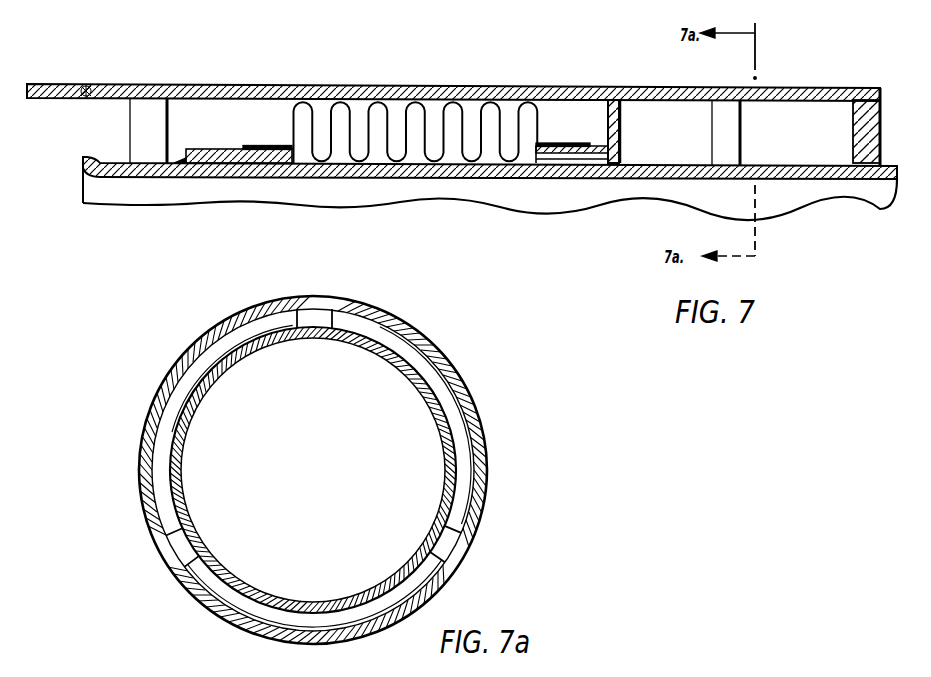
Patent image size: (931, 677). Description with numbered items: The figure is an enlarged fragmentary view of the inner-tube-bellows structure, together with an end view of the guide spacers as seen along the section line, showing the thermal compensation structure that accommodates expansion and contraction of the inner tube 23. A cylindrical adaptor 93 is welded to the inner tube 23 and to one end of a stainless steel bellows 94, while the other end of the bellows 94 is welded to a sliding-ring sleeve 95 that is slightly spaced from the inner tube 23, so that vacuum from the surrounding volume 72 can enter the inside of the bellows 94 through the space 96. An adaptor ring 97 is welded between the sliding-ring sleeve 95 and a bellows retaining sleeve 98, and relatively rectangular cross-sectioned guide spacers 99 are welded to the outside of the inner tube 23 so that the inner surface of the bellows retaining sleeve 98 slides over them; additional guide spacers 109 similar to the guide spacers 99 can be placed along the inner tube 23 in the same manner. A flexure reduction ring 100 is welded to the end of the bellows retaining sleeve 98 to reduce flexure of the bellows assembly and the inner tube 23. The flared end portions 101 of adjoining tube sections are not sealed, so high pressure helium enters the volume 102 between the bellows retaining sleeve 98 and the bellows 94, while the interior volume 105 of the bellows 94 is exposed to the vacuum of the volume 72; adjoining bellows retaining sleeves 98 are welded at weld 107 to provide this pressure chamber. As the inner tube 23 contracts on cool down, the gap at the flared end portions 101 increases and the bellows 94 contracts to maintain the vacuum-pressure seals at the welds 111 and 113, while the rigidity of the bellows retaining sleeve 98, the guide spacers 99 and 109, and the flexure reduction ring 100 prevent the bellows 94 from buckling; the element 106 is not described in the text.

In FIG. 7, the inner tube 23 is at (467, 165).
In FIG. 7a, the inner tube 23 is at (396, 371).
In FIG. 7, the volume 72 is at (860, 81).
In FIG. 7, the cylindrical adaptor 93 is at (208, 149).
In FIG. 7, the stainless steel bellows 94 is at (388, 100).
In FIG. 7, the sliding-ring sleeve 95 is at (619, 153).
In FIG. 7, the space 96 is at (630, 166).
In FIG. 7, the adaptor ring 97 is at (621, 117).
In FIG. 7, the bellows retaining sleeve 98 is at (233, 68).
In FIG. 7a, the bellows retaining sleeve 98 is at (490, 420).
In FIG. 7, the guide spacers 99 is at (718, 131).
In FIG. 7a, the guide spacers 99 is at (318, 318).
In FIG. 7, the flexure reduction ring 100 is at (853, 128).
In FIG. 7, the flared end portions 101 is at (86, 157).
In FIG. 7, the volume 102 is at (219, 123).
In FIG. 7, the interior volume 105 is at (378, 158).
In FIG. 7, the seal strip 106 is at (293, 141).
In FIG. 7, the weld 107 is at (89, 87).
In FIG. 7, the additional guide spacers 109 is at (150, 108).
In FIG. 7, the weld 111 is at (166, 165).
In FIG. 7, the weld 113 is at (613, 100).